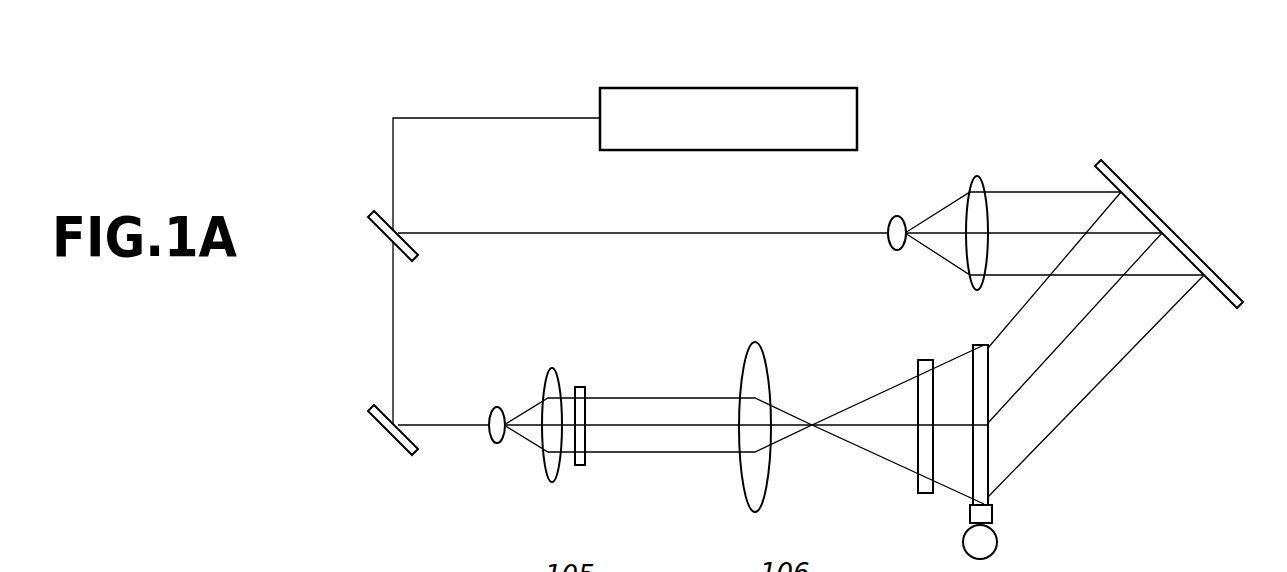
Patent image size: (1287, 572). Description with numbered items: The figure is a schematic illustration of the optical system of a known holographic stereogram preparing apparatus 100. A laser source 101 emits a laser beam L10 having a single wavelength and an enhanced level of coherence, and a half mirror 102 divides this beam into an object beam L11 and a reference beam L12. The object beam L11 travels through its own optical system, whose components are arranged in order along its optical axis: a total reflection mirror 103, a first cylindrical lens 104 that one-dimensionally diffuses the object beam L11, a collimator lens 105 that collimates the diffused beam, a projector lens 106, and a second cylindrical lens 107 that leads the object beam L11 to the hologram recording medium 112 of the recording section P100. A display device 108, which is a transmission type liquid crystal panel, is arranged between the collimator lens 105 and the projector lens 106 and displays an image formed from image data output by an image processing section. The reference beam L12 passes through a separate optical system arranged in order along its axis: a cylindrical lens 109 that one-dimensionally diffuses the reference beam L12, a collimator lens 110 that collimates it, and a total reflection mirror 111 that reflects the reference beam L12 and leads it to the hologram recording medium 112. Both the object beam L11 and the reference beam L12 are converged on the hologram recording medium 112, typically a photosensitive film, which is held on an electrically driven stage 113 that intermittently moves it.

The holographic stereogram preparing apparatus 100 is at (1067, 119).
The laser source 101 is at (742, 88).
The half mirror 102 is at (378, 228).
The total reflection mirror 103 is at (384, 436).
The first cylindrical lens 104 is at (495, 407).
The collimator lens 105 is at (549, 368).
The projector lens 106 is at (757, 342).
The second cylindrical lens 107 is at (926, 360).
The display device 108 is at (582, 387).
The cylindrical lens 109 is at (896, 250).
The collimator lens 110 is at (977, 178).
The total reflection mirror 111 is at (1134, 191).
The hologram recording medium 112 is at (982, 472).
The electrically driven stage 113 is at (986, 540).
The recording section P100 is at (996, 428).
The laser beam L10 is at (540, 118).
The object beam L11 is at (437, 422).
The reference beam L12 is at (478, 232).